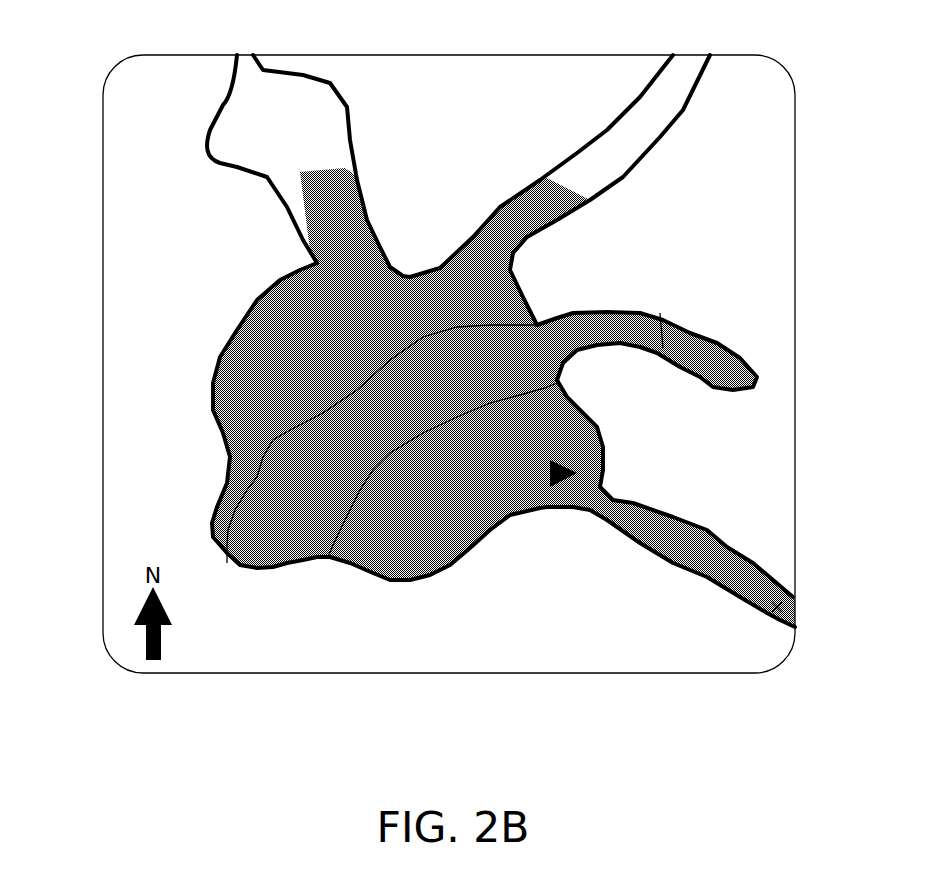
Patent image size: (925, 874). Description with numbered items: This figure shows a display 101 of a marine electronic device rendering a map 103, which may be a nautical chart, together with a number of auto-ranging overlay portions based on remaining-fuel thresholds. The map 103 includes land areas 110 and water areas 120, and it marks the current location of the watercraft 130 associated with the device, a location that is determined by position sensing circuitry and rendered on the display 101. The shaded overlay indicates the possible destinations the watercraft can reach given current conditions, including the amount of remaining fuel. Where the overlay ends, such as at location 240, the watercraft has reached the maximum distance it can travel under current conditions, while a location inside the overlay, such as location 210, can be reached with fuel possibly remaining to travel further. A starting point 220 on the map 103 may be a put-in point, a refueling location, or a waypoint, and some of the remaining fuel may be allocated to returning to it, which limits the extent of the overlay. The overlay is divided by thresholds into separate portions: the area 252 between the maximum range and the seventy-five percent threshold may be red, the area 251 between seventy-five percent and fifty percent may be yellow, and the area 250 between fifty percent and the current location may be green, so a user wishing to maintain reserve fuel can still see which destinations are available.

The display 101 is at (720, 55).
The map 103 is at (794, 86).
The land area 110 is at (454, 152).
The water area 120 is at (302, 126).
The watercraft 130 is at (562, 460).
The location within the auto-ranging overlay 210 is at (725, 370).
The starting point 220 is at (782, 588).
The location where the auto-ranging overlay ends 240 is at (307, 175).
The area between 50% and the current location 250 is at (380, 545).
The area between 75% and 50% 251 is at (340, 480).
The area between maximum and 75% 252 is at (258, 388).